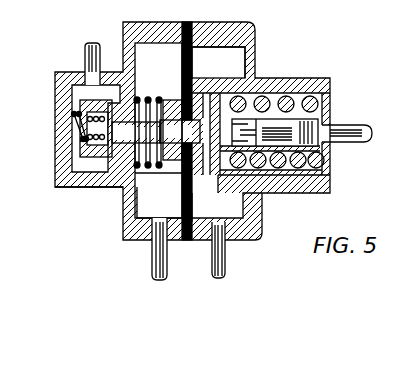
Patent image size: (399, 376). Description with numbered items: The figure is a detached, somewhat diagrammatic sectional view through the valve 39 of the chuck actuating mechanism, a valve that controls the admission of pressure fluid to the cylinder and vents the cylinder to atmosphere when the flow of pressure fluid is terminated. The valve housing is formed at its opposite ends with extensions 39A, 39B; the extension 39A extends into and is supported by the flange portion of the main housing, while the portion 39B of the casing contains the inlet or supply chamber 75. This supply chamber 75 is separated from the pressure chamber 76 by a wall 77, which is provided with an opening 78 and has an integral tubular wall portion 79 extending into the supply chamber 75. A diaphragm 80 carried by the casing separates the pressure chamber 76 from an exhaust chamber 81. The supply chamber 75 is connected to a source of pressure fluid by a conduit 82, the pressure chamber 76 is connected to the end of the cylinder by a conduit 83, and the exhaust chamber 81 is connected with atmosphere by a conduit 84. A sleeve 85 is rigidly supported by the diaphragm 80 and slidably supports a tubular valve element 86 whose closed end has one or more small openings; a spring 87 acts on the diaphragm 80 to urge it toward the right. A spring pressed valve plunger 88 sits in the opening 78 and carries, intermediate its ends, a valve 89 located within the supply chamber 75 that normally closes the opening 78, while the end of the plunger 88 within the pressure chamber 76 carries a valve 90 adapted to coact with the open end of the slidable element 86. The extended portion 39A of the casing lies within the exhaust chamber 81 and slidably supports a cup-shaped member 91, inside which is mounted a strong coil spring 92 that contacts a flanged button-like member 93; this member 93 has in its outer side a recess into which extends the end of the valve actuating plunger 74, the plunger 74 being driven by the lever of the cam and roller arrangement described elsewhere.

The valve 39 is at (224, 28).
The extension of valve housing 39A is at (280, 80).
The extension of valve housing 39B is at (82, 188).
The valve actuating plunger 74 is at (368, 128).
The supply chamber 75 is at (77, 176).
The pressure chamber 76 is at (141, 203).
The wall 77 is at (137, 175).
The opening 78 is at (126, 60).
The tubular wall portion 79 is at (93, 156).
The diaphragm 80 is at (194, 55).
The exhaust chamber 81 is at (256, 48).
The conduit 82 is at (85, 56).
The conduit 83 is at (153, 266).
The conduit 84 is at (226, 265).
The sleeve 85 is at (208, 73).
The tubular valve element 86 is at (194, 122).
The spring 87 is at (153, 100).
The spring pressed valve plunger 88 is at (134, 132).
The valve 89 is at (74, 116).
The valve 90 is at (158, 97).
The cup-shaped member 91 is at (333, 96).
The coil spring 92 is at (277, 195).
The flanged button-like member 93 is at (328, 117).